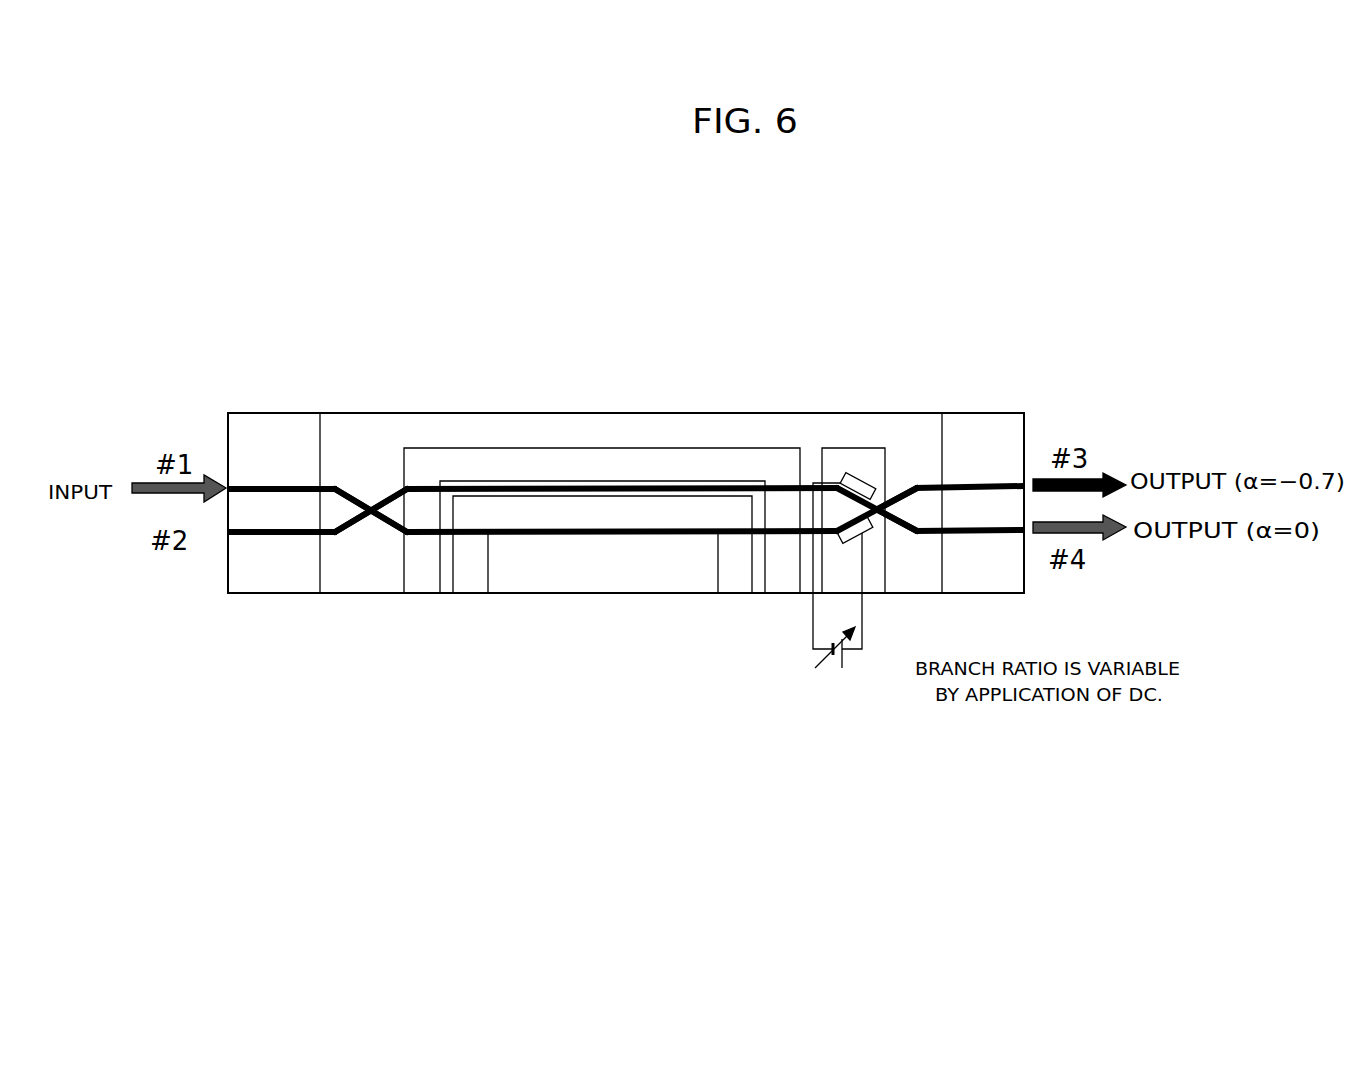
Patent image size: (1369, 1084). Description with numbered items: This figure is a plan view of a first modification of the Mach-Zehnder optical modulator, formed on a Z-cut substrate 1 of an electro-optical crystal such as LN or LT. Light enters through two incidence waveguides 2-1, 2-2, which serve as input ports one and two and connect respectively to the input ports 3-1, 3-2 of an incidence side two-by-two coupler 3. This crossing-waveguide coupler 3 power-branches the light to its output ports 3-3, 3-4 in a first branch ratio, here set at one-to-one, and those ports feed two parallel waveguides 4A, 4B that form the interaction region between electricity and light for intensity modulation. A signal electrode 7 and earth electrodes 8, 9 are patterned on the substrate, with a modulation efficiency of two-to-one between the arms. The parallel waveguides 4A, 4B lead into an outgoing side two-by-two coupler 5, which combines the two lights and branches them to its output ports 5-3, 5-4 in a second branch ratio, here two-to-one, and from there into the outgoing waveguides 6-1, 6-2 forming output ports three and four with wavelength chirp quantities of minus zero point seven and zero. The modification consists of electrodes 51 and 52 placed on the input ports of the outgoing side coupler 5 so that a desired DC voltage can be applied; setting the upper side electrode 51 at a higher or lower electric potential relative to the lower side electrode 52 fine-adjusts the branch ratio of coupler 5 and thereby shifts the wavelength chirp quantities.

The substrate 1 is at (1010, 417).
The incidence waveguide 2-1 is at (293, 487).
The incidence waveguide 2-2 is at (269, 536).
The incidence side 2×2 coupler 3 is at (372, 514).
The input port 3-1 is at (350, 501).
The input port 3-2 is at (350, 536).
The output port 3-3 is at (391, 496).
The output port 3-4 is at (392, 522).
The parallel waveguide 4A is at (552, 486).
The parallel waveguide 4B is at (580, 528).
The outgoing side 2×2 coupler 5 is at (881, 513).
The output port 5-3 is at (900, 498).
The output port 5-4 is at (895, 518).
The upper side electrode 51 is at (853, 478).
The lower side electrode 52 is at (846, 541).
The outgoing waveguide 6-1 is at (977, 484).
The outgoing waveguide 6-2 is at (978, 534).
The signal electrode 7 is at (450, 580).
The earth electrode 8 is at (347, 578).
The earth electrode 9 is at (693, 567).